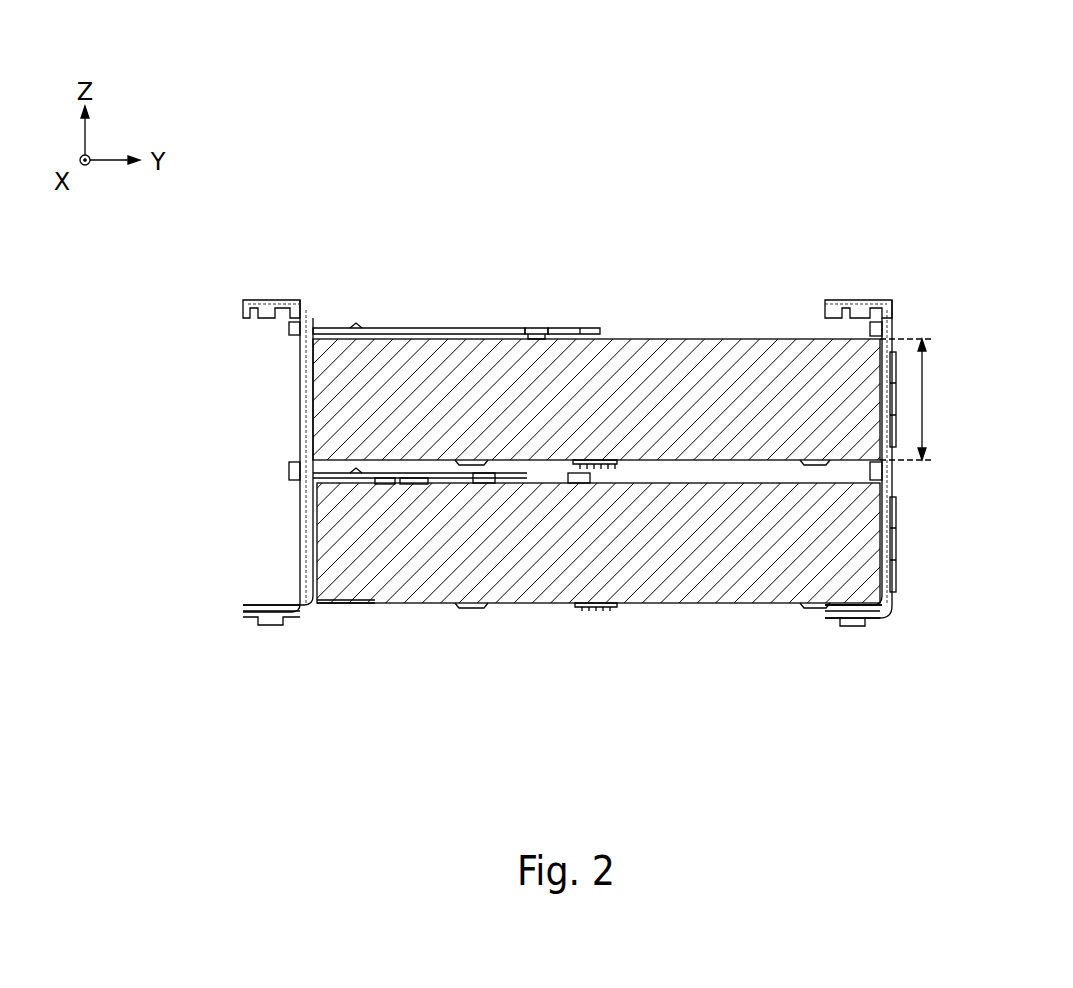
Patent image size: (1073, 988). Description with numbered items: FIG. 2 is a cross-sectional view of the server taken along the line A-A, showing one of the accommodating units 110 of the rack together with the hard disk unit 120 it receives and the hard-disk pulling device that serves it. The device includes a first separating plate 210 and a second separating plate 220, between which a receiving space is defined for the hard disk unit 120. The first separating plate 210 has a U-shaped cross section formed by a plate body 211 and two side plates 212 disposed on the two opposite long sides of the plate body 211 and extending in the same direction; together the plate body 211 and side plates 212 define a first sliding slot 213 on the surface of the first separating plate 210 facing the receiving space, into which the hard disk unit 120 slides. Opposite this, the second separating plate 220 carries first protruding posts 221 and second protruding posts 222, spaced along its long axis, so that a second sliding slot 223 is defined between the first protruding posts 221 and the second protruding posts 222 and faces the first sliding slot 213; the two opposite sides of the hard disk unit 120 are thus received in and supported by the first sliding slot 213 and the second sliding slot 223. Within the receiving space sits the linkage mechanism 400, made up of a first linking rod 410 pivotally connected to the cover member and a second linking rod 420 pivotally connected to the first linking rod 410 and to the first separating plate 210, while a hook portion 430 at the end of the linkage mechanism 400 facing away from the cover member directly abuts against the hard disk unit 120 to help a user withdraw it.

The accommodating unit 110 is at (895, 635).
The hard disk unit 120 is at (672, 453).
The first separating plate 210 is at (227, 212).
The plate body 211 is at (340, 462).
The side plate 212 is at (380, 476).
The first sliding slot 213 is at (322, 322).
The second separating plate 220 is at (290, 423).
The first protruding post 221 is at (878, 470).
The second protruding post 222 is at (878, 328).
The second sliding slot 223 is at (924, 398).
The linkage mechanism 400 is at (468, 255).
The first linking rod 410 is at (580, 274).
The second linking rod 420 is at (490, 328).
The hook portion 430 is at (536, 328).